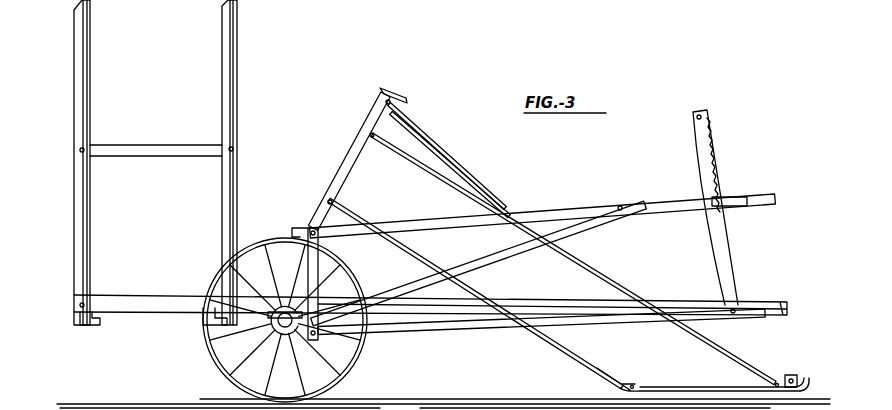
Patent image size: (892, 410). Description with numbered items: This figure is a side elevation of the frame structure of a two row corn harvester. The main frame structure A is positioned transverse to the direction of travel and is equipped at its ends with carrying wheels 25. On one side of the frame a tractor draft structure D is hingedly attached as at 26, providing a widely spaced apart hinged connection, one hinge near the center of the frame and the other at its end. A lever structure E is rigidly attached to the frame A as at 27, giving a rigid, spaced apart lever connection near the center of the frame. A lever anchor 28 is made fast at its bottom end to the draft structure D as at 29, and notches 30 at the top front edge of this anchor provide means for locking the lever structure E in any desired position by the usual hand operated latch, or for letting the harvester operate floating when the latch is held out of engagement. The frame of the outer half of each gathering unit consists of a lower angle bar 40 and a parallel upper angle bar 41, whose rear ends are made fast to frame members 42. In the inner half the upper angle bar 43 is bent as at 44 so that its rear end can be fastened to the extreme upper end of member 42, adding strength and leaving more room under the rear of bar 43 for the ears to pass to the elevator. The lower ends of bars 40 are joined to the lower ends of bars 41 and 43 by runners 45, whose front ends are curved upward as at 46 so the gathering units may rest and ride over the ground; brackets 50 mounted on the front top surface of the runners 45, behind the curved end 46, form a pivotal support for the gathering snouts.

The carrying wheels 25 is at (357, 370).
The hinged attachment 26 is at (313, 340).
The rigid lever attachment 27 is at (322, 235).
The lever anchor 28 is at (735, 238).
The anchor fastening 29 is at (734, 314).
The notches 30 is at (720, 155).
The lower angle bar 40 is at (568, 358).
The upper angle bar 41 is at (587, 272).
The frame members 42 is at (348, 176).
The upper angle bar 43 is at (433, 148).
The bend 44 is at (523, 225).
The runners 45 is at (683, 388).
The curved end 46 is at (803, 375).
The brackets 50 is at (785, 377).
The main frame structure A is at (337, 185).
The tractor draft structure D is at (478, 327).
The lever structure E is at (484, 268).